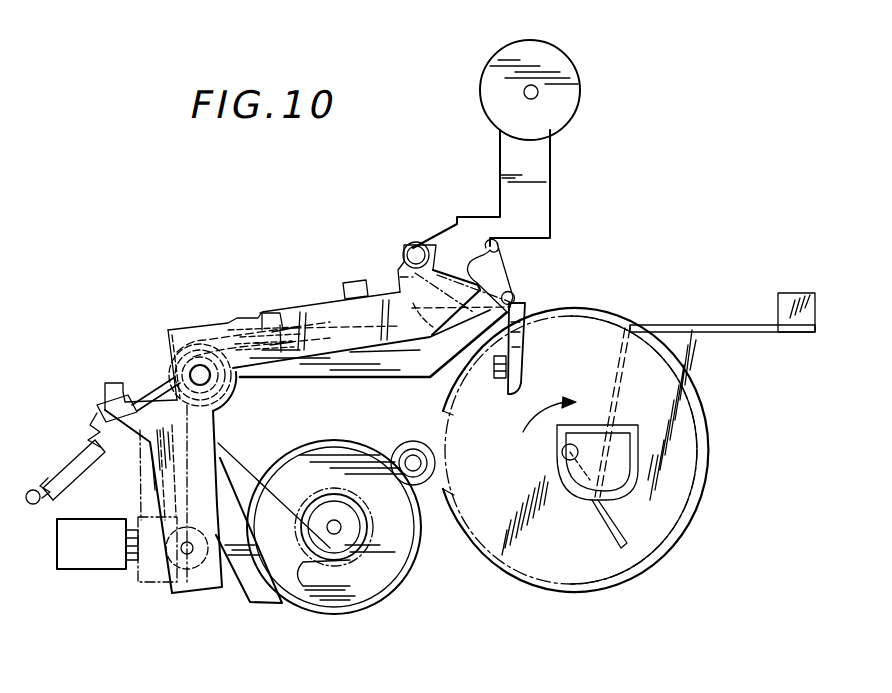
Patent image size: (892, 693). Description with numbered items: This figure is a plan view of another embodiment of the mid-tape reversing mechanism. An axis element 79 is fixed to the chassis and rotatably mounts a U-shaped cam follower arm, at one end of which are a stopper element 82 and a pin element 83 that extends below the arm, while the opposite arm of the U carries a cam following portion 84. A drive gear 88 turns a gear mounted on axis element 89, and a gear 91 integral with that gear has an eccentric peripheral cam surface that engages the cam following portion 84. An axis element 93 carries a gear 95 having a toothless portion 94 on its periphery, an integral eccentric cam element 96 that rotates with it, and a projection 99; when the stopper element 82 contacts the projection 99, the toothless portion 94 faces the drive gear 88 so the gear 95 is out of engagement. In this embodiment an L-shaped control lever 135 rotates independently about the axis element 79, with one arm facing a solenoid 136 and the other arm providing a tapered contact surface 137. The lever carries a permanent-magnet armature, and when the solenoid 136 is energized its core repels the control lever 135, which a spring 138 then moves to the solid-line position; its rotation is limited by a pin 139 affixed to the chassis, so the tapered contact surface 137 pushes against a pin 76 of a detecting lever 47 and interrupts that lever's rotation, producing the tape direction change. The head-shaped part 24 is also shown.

The key head 24 is at (540, 92).
The detecting lever 47 is at (548, 152).
The pin 76 is at (410, 250).
The axis element 79 is at (205, 370).
The stopper element 82 is at (512, 258).
The pin element 83 is at (398, 291).
The cam following portion 84 is at (290, 608).
The drive gear 88 is at (426, 490).
The axis element 89 is at (716, 326).
The gear 91 is at (372, 550).
The axis element 93 is at (568, 462).
The toothless portion 94 is at (441, 421).
The gear 95 is at (704, 475).
The eccentric cam element 96 is at (612, 485).
The projection 99 is at (495, 373).
The L-shaped control lever 135 is at (200, 600).
The solenoid 136 is at (84, 558).
The tapered contact surface 137 is at (436, 247).
The spring 138 is at (97, 418).
The pin 139 is at (352, 278).